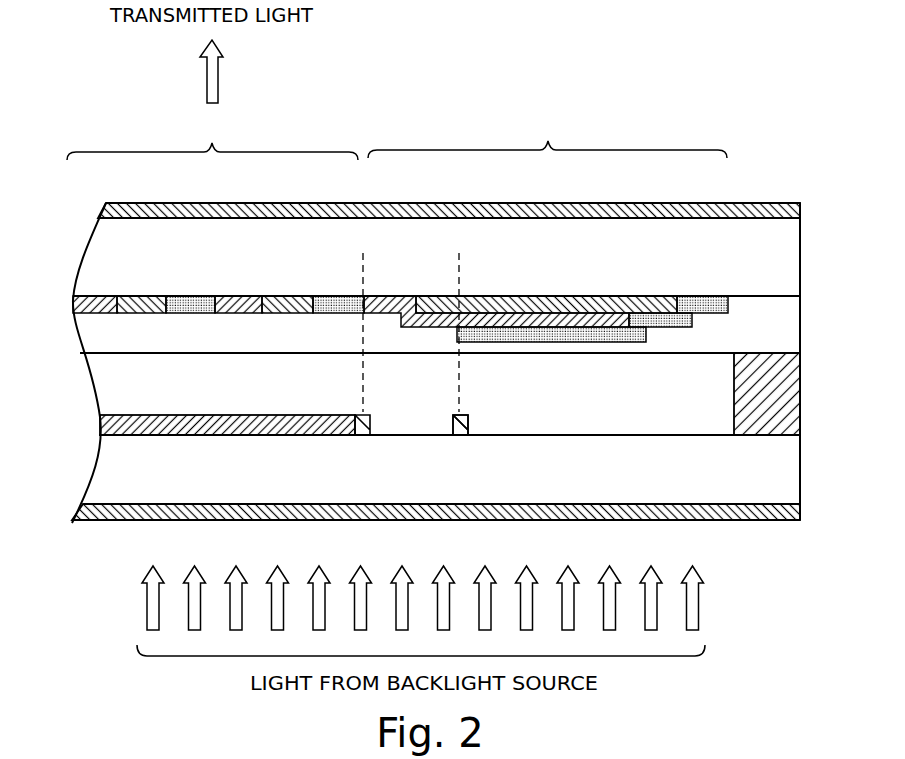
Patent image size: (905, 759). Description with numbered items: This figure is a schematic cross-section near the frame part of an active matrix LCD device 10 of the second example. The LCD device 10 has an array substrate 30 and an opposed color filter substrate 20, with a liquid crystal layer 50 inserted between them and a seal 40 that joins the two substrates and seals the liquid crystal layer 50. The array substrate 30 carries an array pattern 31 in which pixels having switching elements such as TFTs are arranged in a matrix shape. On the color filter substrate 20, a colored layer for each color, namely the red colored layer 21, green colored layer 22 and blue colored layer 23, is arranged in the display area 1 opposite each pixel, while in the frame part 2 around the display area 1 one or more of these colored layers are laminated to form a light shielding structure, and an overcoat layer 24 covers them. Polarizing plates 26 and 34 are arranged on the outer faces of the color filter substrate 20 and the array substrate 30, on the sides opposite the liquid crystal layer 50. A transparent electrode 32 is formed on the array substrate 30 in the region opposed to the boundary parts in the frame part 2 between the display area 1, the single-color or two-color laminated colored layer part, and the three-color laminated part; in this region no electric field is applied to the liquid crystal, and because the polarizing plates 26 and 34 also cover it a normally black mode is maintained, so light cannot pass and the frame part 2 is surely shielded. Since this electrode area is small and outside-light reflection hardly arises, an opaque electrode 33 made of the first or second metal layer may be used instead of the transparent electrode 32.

The LCD device 10 is at (437, 92).
The display area 1 is at (212, 137).
The frame part 2 is at (547, 136).
The color filter substrate 20 is at (780, 258).
The red (R) colored layer 21 is at (243, 296).
The green (G) colored layer 22 is at (303, 296).
The blue (B) colored layer 23 is at (187, 296).
The overcoat layer 24 is at (780, 332).
The polarizing plate 26 is at (770, 212).
The array substrate 30 is at (740, 485).
The array pattern 31 is at (177, 427).
The transparent electrode 32 is at (457, 428).
The opaque electrode 33 is at (460, 425).
The polarizing plate 34 is at (787, 512).
The seal 40 is at (781, 381).
The liquid crystal layer 50 is at (100, 380).